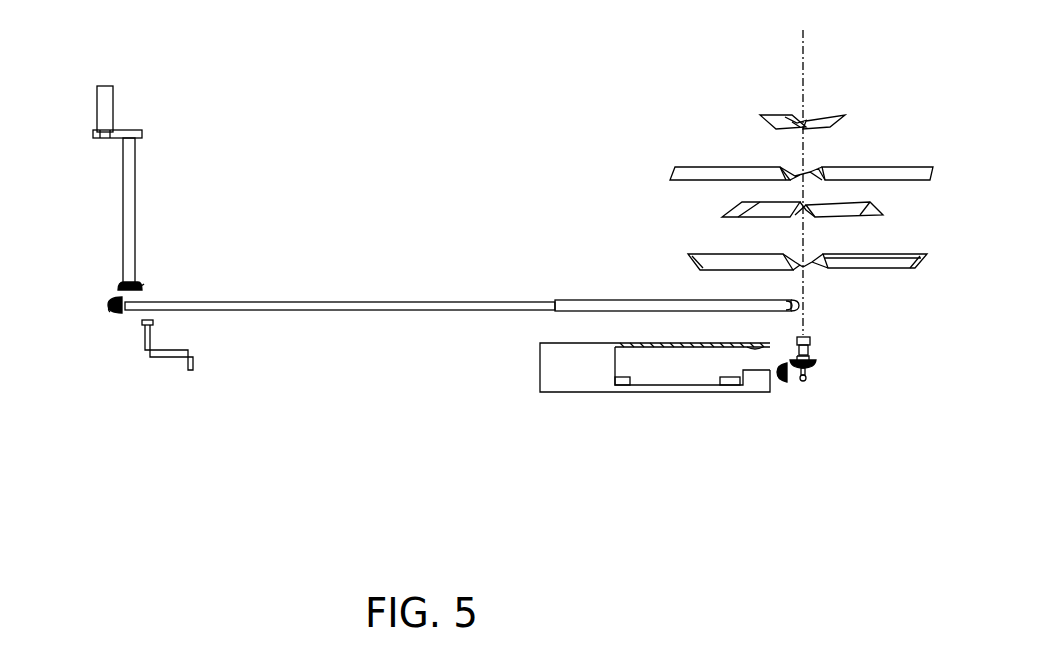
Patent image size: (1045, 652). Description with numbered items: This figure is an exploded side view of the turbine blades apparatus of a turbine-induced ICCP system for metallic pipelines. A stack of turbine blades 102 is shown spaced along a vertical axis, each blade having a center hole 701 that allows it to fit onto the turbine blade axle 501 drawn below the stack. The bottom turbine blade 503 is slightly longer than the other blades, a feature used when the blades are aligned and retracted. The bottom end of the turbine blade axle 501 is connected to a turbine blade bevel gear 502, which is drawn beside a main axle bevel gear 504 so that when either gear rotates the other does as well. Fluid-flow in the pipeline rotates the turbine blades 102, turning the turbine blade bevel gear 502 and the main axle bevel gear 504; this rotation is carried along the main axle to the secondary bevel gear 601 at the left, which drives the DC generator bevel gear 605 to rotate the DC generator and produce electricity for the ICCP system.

The turbine blades 102 is at (657, 132).
The bottom turbine blade 503 is at (690, 264).
The center hole 701 is at (806, 262).
The turbine blade axle 501 is at (810, 336).
The turbine blade bevel gear 502 is at (818, 362).
The main axle bevel gear 504 is at (787, 383).
The DC generator bevel gear 605 is at (118, 286).
The secondary bevel gear 601 is at (112, 306).